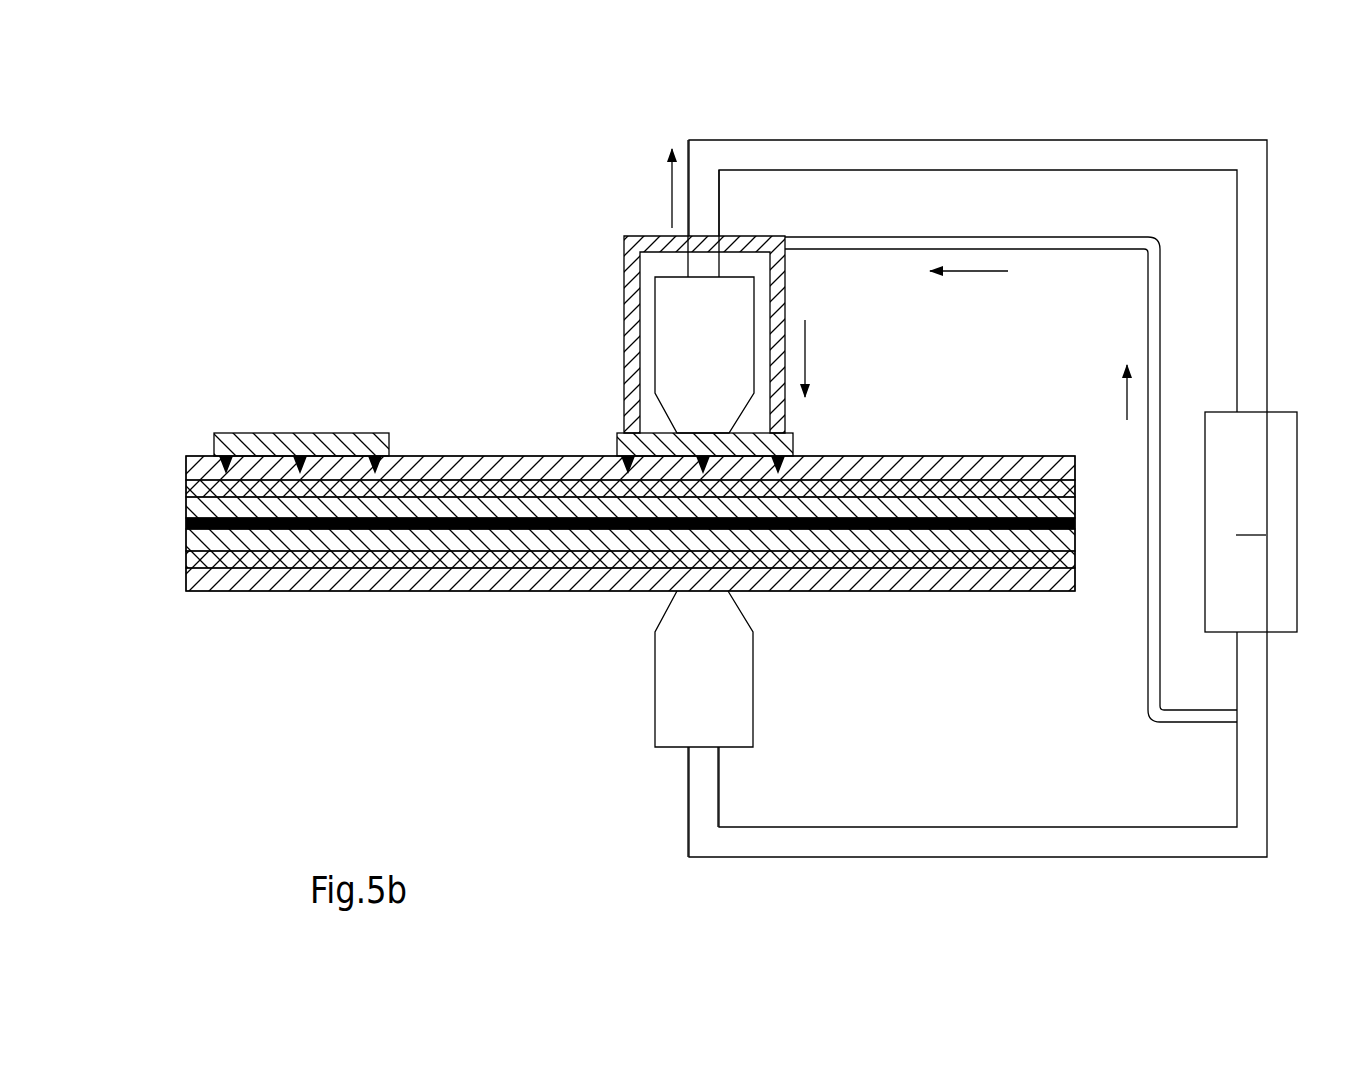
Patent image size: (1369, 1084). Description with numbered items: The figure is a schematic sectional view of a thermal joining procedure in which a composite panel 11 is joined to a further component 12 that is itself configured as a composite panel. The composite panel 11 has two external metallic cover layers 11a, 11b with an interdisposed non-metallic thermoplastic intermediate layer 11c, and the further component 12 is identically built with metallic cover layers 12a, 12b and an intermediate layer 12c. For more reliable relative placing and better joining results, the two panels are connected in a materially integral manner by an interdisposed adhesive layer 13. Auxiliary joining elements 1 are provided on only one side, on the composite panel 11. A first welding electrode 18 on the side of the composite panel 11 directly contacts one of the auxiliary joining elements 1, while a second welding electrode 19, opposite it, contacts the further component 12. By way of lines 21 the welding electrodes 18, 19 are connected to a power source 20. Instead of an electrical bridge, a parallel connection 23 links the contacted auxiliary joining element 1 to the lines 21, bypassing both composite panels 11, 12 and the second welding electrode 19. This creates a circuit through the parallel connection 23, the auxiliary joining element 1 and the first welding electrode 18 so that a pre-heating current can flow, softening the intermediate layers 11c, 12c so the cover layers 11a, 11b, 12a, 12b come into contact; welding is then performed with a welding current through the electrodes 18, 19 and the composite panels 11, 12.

The auxiliary joining element 1 is at (345, 440).
The composite panel 11 is at (589, 434).
The metallic cover layer 11a is at (203, 468).
The metallic cover layer 11b is at (198, 510).
The intermediate layer 11c is at (207, 487).
The further component 12 is at (589, 616).
The metallic cover layer 12a is at (200, 580).
The metallic cover layer 12b is at (208, 537).
The intermediate layer 12c is at (205, 559).
The adhesive layer 13 is at (187, 524).
The first welding electrode 18 is at (673, 330).
The second welding electrode 19 is at (737, 700).
The power source 20 is at (1251, 522).
The lines 21 is at (958, 150).
The parallel connection 23 is at (1065, 277).